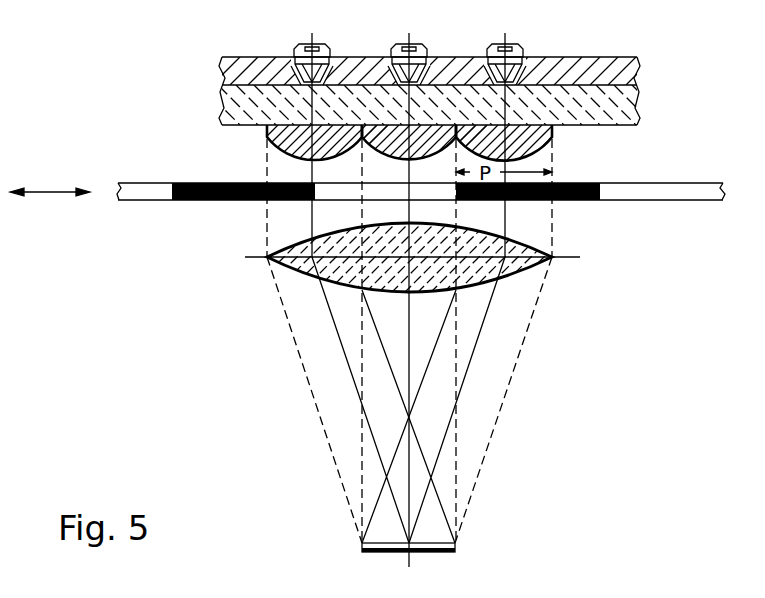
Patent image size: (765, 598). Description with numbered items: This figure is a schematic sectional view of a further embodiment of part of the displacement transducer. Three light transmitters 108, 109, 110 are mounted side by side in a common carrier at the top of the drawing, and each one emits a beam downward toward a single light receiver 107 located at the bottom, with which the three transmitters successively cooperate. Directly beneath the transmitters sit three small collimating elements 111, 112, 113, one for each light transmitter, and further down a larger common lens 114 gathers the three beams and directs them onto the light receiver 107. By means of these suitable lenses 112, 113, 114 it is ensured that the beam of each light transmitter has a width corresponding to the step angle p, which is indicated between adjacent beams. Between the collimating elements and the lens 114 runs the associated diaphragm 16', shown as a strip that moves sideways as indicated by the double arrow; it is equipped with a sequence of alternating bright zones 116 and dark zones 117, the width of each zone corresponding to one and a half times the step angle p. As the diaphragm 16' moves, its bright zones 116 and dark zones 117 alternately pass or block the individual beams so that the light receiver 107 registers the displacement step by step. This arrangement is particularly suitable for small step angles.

The light receiver 107 is at (456, 545).
The light transmitter 108 is at (299, 44).
The light transmitter 109 is at (397, 44).
The light transmitter 110 is at (493, 44).
The collimating lens 111 is at (277, 157).
The lens 112 is at (408, 164).
The lens 113 is at (540, 157).
The lens 114 is at (530, 272).
The bright zone 116 is at (665, 188).
The dark zone 117 is at (583, 201).
The diaphragm 16' is at (82, 214).